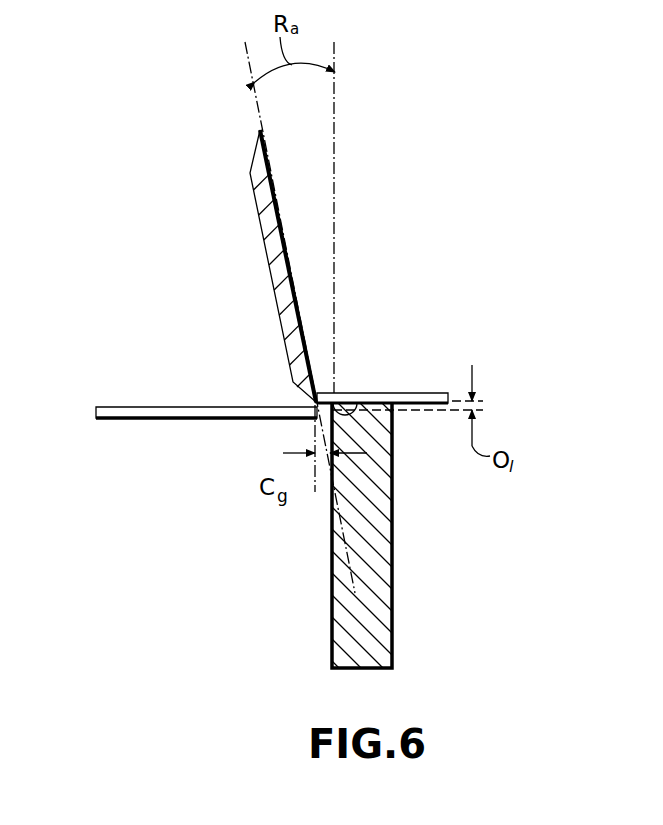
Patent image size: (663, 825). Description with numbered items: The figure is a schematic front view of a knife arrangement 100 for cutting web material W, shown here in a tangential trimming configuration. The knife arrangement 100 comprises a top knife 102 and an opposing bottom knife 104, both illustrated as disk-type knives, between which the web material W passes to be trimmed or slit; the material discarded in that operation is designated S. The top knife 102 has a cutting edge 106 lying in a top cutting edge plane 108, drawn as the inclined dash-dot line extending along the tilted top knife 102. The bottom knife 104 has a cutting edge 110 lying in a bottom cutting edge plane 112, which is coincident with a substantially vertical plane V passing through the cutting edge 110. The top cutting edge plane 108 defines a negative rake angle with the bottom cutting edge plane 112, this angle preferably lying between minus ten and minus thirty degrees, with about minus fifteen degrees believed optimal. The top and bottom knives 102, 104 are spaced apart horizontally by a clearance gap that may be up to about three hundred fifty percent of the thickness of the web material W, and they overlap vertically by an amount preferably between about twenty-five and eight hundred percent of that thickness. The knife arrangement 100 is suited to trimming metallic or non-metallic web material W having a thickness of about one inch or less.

The knife arrangement 100 is at (130, 172).
The top knife 102 is at (273, 280).
The bottom knife 104 is at (330, 618).
The cutting edge 106 is at (316, 404).
The top cutting edge plane 108 is at (258, 102).
The cutting edge 110 is at (357, 407).
The bottom cutting edge plane 112 is at (335, 250).
The web material W is at (164, 420).
The discarded material S is at (420, 393).